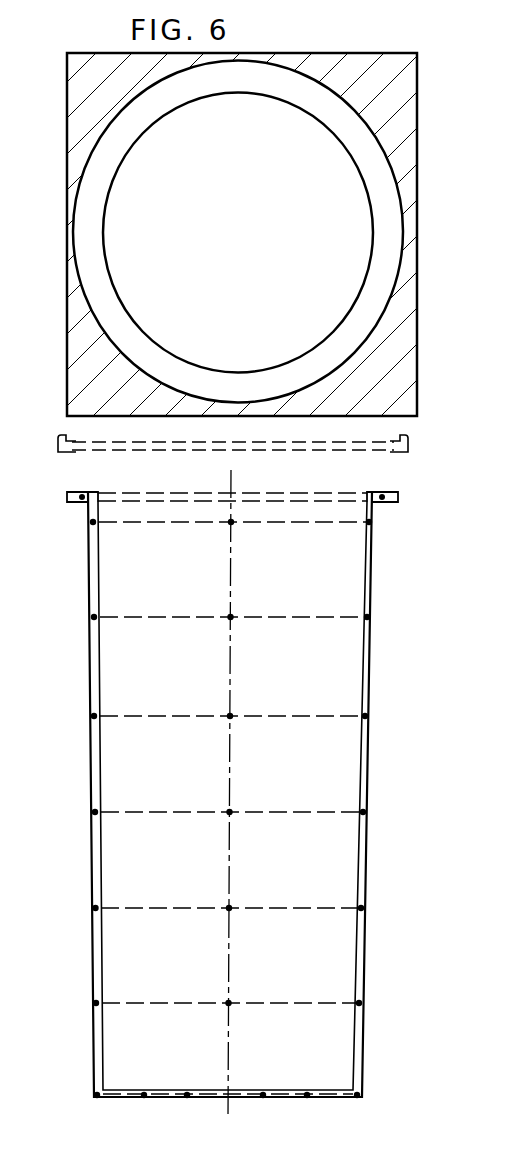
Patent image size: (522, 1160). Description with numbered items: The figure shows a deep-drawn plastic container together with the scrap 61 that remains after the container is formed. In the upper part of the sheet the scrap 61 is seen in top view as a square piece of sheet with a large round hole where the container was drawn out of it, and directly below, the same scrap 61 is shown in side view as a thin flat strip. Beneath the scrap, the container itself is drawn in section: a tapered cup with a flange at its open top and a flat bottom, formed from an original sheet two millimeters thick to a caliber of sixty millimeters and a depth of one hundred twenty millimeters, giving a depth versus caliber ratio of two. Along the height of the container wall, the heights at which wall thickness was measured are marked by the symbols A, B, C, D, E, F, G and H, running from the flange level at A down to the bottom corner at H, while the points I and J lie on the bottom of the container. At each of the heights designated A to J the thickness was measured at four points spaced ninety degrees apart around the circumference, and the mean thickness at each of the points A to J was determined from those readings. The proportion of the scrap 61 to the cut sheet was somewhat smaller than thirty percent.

The scrap 61 is at (410, 66).
The wall thickness measurement point A is at (82, 497).
The wall thickness measurement point B is at (93, 522).
The wall thickness measurement point C is at (94, 617).
The wall thickness measurement point D is at (94, 716).
The wall thickness measurement point E is at (95, 812).
The wall thickness measurement point F is at (95, 908).
The wall thickness measurement point G is at (96, 1003).
The wall thickness measurement point H is at (97, 1095).
The wall thickness measurement point I is at (144, 1097).
The wall thickness measurement point J is at (187, 1097).